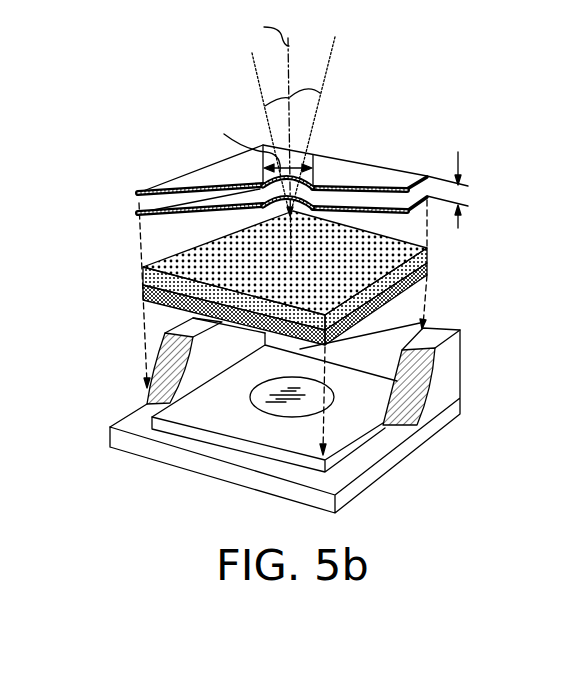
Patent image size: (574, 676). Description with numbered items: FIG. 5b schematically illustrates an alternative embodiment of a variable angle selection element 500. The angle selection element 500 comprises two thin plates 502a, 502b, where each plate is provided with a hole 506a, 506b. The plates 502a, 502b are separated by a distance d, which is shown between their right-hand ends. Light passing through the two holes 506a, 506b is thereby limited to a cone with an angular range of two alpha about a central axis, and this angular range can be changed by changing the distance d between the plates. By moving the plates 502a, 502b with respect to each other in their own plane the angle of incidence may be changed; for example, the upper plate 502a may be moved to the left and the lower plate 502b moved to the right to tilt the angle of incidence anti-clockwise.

The angle selection element 500 is at (360, 147).
The upper plate 502a is at (138, 194).
The lower plate 502b is at (138, 214).
The hole 506a is at (262, 178).
The hole 506b is at (142, 246).